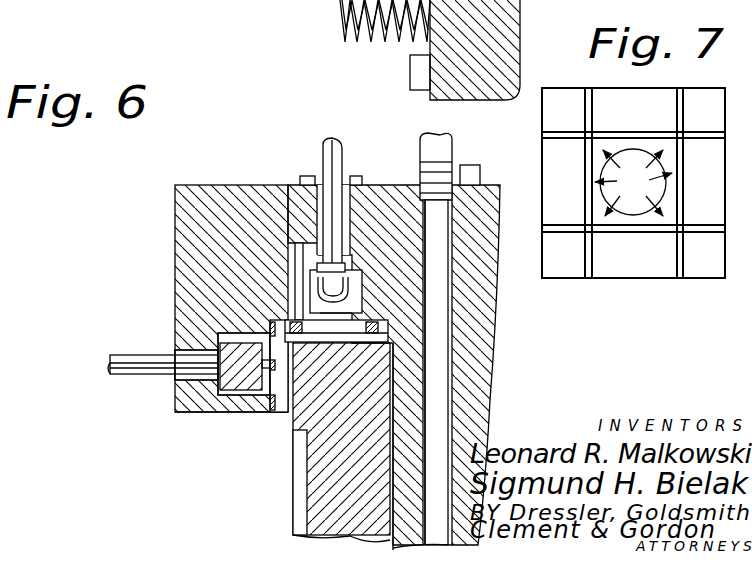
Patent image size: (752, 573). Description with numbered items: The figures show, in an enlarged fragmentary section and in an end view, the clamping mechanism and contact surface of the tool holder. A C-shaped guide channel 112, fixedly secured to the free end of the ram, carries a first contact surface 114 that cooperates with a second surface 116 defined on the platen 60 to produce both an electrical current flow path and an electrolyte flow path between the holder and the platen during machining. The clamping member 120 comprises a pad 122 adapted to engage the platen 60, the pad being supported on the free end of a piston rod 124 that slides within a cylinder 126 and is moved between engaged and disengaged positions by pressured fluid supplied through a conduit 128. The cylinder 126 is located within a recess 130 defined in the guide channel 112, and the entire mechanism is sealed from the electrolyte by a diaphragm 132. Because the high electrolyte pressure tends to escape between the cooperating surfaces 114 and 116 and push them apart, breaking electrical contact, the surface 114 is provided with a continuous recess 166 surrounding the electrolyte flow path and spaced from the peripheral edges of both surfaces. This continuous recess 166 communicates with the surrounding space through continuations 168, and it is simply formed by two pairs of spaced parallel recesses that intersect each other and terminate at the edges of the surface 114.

In FIG. 6, the platen 60 is at (300, 430).
In FIG. 6, the C-shaped guide channel 112 is at (205, 205).
In FIG. 6, the first contact surface 114 is at (395, 405).
In FIG. 7, the first contact surface 114 is at (652, 119).
In FIG. 6, the second surface 116 is at (393, 432).
In FIG. 6, the clamping member 120 is at (215, 312).
In FIG. 6, the pad 122 is at (256, 400).
In FIG. 6, the piston rod 124 is at (208, 410).
In FIG. 6, the cylinder 126 is at (225, 362).
In FIG. 6, the conduit 128 is at (135, 370).
In FIG. 6, the recess 130 is at (218, 338).
In FIG. 6, the diaphragm 132 is at (215, 272).
In FIG. 7, the continuous recess 166 is at (584, 158).
In FIG. 7, the continuations of the recess 168 is at (560, 130).